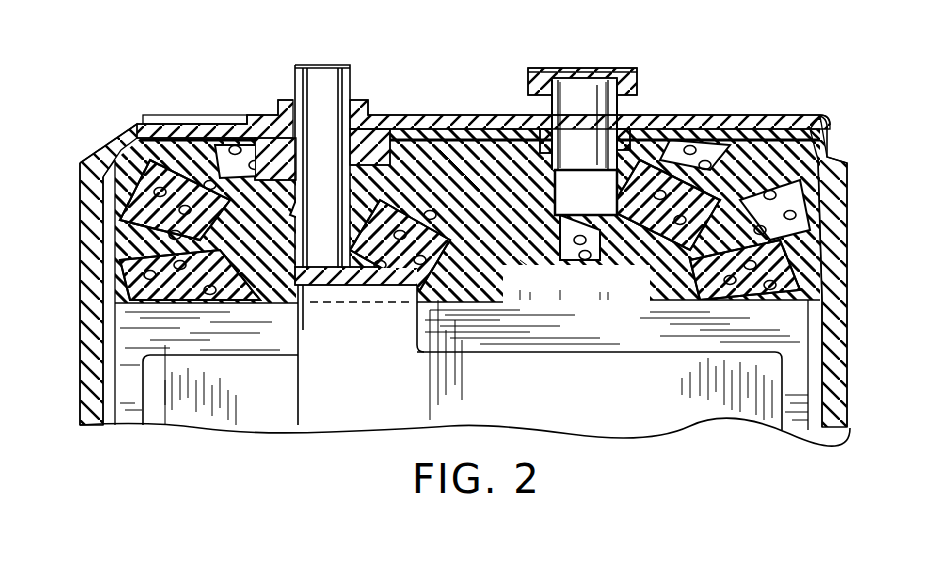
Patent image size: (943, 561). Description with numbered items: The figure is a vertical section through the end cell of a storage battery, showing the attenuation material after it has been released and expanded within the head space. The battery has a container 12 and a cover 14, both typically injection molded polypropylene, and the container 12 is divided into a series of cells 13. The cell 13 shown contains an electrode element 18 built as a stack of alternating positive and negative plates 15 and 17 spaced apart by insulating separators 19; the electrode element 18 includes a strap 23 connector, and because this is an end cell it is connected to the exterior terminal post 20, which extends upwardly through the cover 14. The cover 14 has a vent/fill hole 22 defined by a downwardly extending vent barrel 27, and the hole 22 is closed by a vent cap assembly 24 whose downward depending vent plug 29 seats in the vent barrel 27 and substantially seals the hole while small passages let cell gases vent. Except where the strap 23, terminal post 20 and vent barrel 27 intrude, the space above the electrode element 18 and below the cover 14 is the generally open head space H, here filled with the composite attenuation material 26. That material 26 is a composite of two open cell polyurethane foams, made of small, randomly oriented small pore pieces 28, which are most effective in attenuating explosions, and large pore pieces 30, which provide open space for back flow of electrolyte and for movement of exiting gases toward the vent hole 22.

The container 12 is at (87, 367).
The cell 13 is at (110, 312).
The cover 14 is at (408, 115).
The positive plate 15 is at (278, 388).
The negative plate 17 is at (600, 329).
The electrode element 18 is at (674, 420).
The insulating separator 19 is at (172, 338).
The terminal post 20 is at (346, 66).
The vent/fill hole 22 is at (586, 184).
The strap 23 is at (348, 290).
The vent cap assembly 24 is at (610, 67).
The composite attenuation material 26 is at (718, 135).
The vent barrel 27 is at (586, 173).
The small pore piece 28 is at (160, 140).
The vent plug 29 is at (578, 92).
The large pore piece 30 is at (120, 173).
The head space H is at (767, 135).